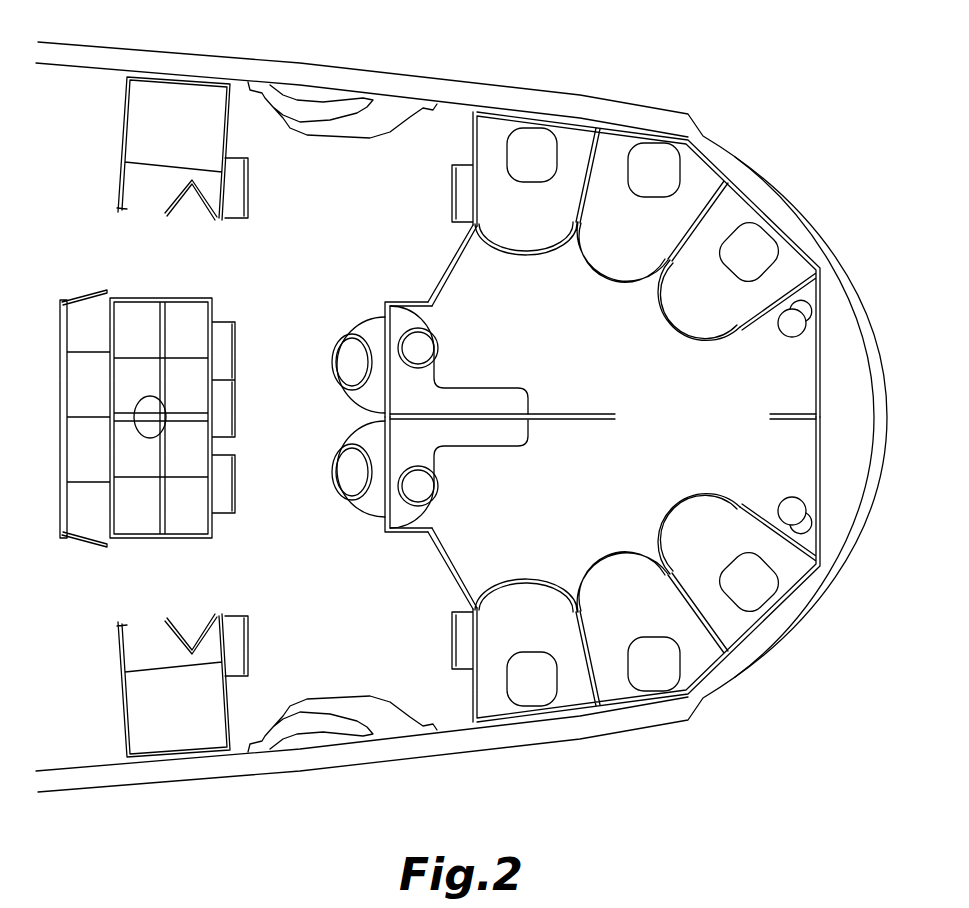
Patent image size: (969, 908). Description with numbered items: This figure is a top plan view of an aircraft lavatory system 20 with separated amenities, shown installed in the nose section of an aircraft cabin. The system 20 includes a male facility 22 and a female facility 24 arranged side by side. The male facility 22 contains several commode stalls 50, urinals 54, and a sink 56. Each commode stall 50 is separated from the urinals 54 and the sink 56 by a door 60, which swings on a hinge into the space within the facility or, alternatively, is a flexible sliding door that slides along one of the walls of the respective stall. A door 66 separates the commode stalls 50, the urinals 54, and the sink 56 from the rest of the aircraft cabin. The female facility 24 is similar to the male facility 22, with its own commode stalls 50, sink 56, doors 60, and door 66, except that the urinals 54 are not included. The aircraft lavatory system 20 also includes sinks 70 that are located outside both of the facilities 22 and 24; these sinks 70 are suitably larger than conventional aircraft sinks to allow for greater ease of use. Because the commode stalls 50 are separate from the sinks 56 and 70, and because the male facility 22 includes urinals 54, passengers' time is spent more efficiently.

The aircraft lavatory system 20 is at (872, 92).
The male facility 22 is at (556, 386).
The female facility 24 is at (573, 506).
The commode stall 50 is at (640, 155).
The urinal 54 is at (788, 334).
The sink 56 is at (440, 348).
The door 60 is at (607, 273).
The door 66 is at (443, 272).
The sink 70 is at (332, 360).